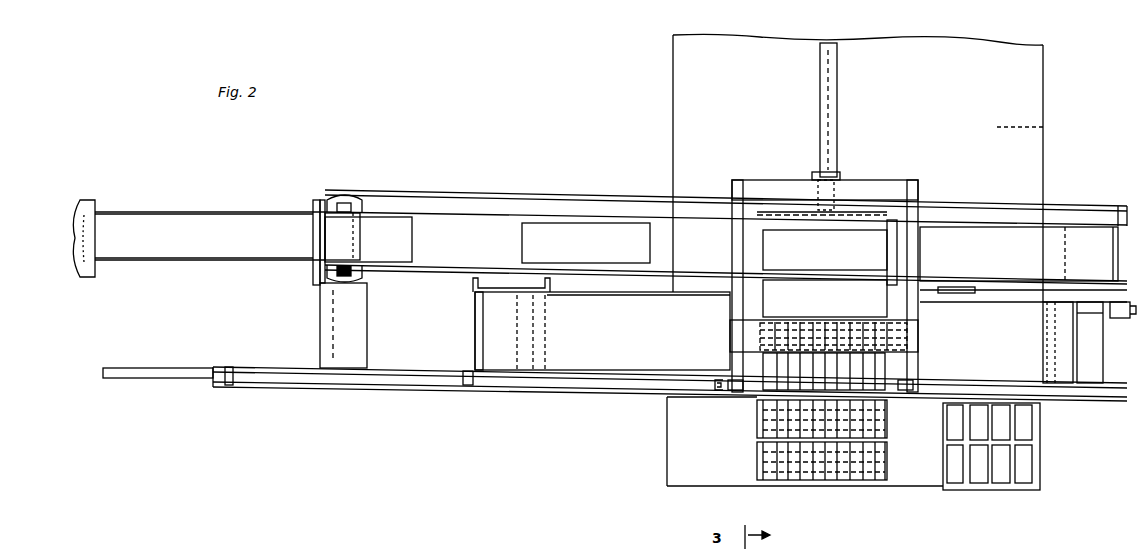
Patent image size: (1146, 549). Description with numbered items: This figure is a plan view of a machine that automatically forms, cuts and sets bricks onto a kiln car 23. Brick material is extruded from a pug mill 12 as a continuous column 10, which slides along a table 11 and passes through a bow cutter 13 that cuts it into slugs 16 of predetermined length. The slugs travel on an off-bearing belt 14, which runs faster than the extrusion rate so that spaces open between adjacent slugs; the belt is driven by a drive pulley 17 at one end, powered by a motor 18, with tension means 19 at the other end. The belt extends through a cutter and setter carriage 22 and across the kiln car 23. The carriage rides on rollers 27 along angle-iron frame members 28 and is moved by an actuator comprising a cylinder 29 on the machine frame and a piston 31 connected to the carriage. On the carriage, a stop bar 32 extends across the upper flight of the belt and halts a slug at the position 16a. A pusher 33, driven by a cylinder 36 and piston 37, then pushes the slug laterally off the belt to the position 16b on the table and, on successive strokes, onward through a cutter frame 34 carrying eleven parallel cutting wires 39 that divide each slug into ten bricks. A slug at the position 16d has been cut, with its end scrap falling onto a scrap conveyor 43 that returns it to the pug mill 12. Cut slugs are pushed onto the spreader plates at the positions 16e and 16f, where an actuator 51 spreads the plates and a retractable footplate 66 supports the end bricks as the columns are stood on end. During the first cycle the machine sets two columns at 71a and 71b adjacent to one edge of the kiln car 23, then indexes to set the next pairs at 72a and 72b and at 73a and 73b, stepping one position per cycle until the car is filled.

The column 10 is at (211, 230).
The table 11 is at (214, 263).
The pug mill 12 is at (86, 200).
The bow cutter 13 is at (316, 200).
The off-bearing belt 14 is at (445, 267).
The slugs 16 is at (566, 233).
The slug position 16a is at (826, 255).
The slug position 16b is at (803, 303).
The slug position 16d is at (762, 370).
The slug position 16e is at (780, 421).
The slug position 16f is at (760, 478).
The drive pulley 17 is at (1062, 243).
The motor 18 is at (1120, 322).
The tension means 19 is at (330, 284).
The cutter and setter carriage 22 is at (935, 190).
The kiln car 23 is at (682, 461).
The rollers 27 is at (742, 200).
The frame members 28 is at (690, 198).
The cylinder 29 is at (391, 386).
The piston 31 is at (548, 390).
The stop bar 32 is at (898, 249).
The pusher 33 is at (862, 205).
The cutter frame 34 is at (920, 336).
The cylinder 36 is at (838, 97).
The piston 37 is at (815, 185).
The cutting wires 39 is at (856, 328).
The scrap conveyor 43 is at (608, 376).
The actuator 51 is at (815, 470).
The footplate 66 is at (888, 455).
The column position 71a is at (1025, 425).
The column position 71b is at (1025, 465).
The column position 72a is at (1000, 410).
The column position 72b is at (1000, 481).
The column position 73a is at (975, 410).
The column position 73b is at (975, 480).